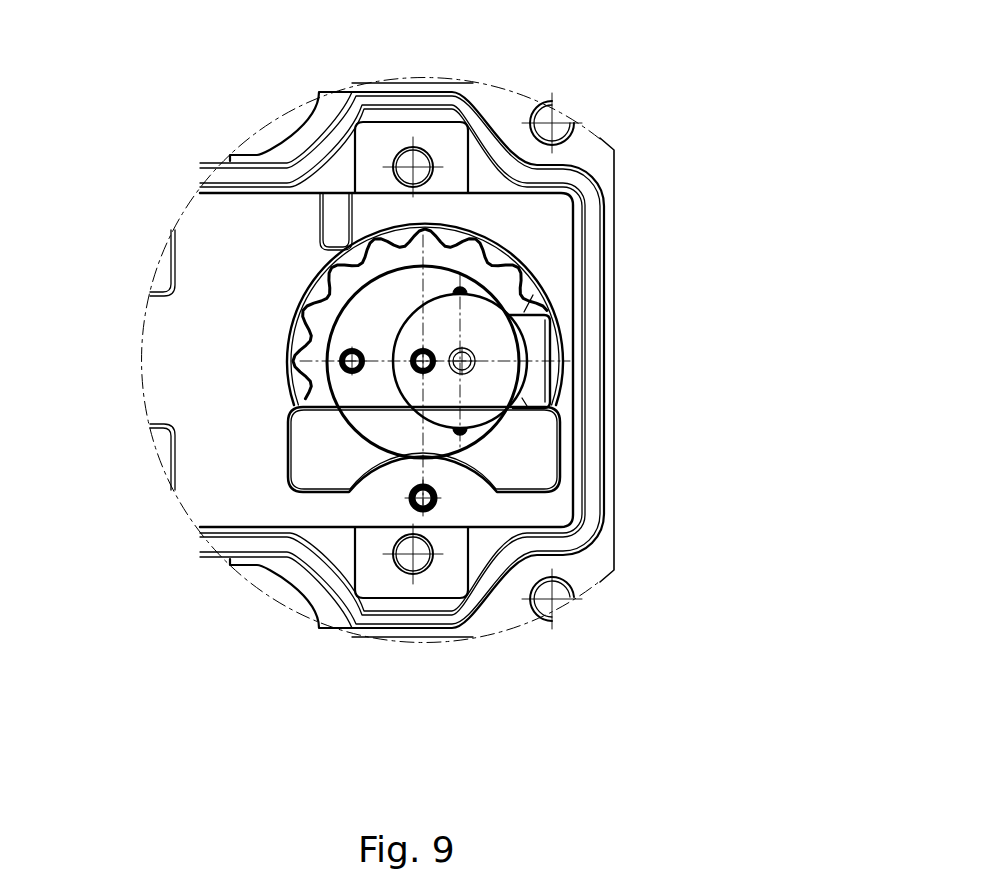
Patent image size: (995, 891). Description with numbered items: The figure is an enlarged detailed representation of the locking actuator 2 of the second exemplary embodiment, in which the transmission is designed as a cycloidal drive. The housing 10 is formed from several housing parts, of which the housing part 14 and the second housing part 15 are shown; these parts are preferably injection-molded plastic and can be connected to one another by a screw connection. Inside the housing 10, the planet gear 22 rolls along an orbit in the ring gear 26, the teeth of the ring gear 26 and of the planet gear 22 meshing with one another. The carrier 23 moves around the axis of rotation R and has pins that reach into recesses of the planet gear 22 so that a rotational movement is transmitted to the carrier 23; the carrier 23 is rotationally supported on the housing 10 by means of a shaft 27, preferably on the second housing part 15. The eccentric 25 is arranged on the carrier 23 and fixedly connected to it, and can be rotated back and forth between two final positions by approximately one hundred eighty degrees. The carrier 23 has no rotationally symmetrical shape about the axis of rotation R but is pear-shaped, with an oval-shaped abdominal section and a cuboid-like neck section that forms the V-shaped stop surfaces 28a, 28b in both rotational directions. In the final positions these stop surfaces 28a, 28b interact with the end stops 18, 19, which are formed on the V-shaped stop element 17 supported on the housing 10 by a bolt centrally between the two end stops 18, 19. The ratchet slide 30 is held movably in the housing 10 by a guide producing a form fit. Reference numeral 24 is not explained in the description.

The pump assembly 2 is at (757, 98).
The housing 10 is at (447, 327).
The housing part 14 is at (595, 163).
The second housing part 15 is at (368, 132).
The stop element 17 is at (462, 478).
The end stop 18 is at (313, 418).
The end stop 19 is at (535, 423).
The planet gear 22 is at (335, 292).
The carrier 23 is at (434, 231).
The rotor shaft 24 is at (387, 361).
The eccentric 25 is at (487, 333).
The ring gear 26 is at (305, 298).
The shaft 27 is at (650, 362).
The axis of rotation R is at (468, 381).
The stop surface 28a is at (533, 295).
The stop surface 28b is at (527, 406).
The ratchet slide 30 is at (173, 333).